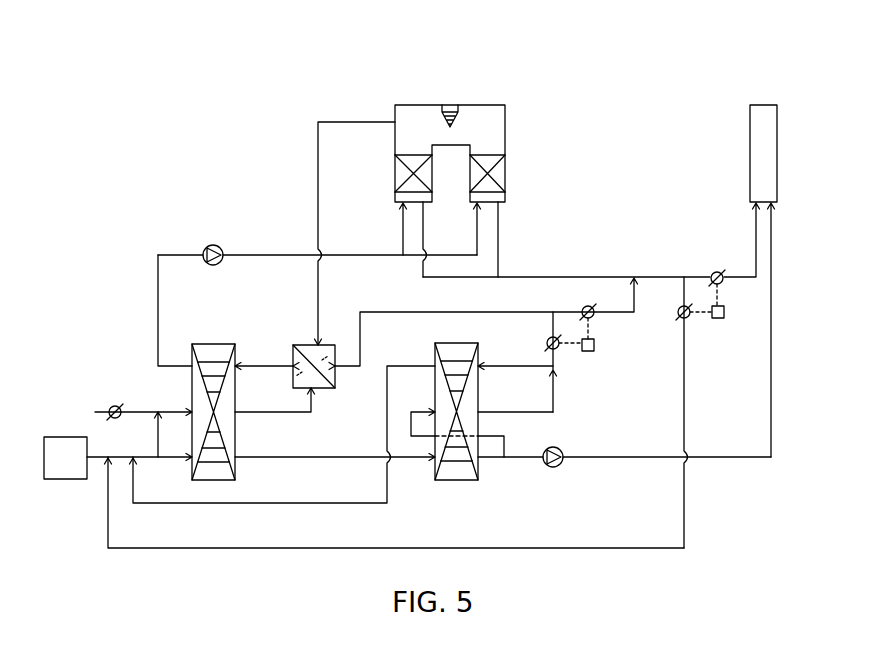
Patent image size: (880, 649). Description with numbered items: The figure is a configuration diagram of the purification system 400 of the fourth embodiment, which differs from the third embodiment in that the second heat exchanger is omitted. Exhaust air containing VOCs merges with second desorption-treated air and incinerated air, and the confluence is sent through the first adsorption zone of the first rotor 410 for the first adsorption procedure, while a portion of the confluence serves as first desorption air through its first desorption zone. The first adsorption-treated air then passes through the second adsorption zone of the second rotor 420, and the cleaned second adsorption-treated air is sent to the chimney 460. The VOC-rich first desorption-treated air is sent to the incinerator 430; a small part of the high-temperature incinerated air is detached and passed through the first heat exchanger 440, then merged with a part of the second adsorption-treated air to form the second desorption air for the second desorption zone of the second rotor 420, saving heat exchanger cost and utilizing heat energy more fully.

The purification system 400 is at (125, 92).
The first rotor 410 is at (237, 436).
The second rotor 420 is at (471, 430).
The incinerator 430 is at (460, 84).
The first heat exchanger 440 is at (321, 344).
The chimney 460 is at (777, 152).